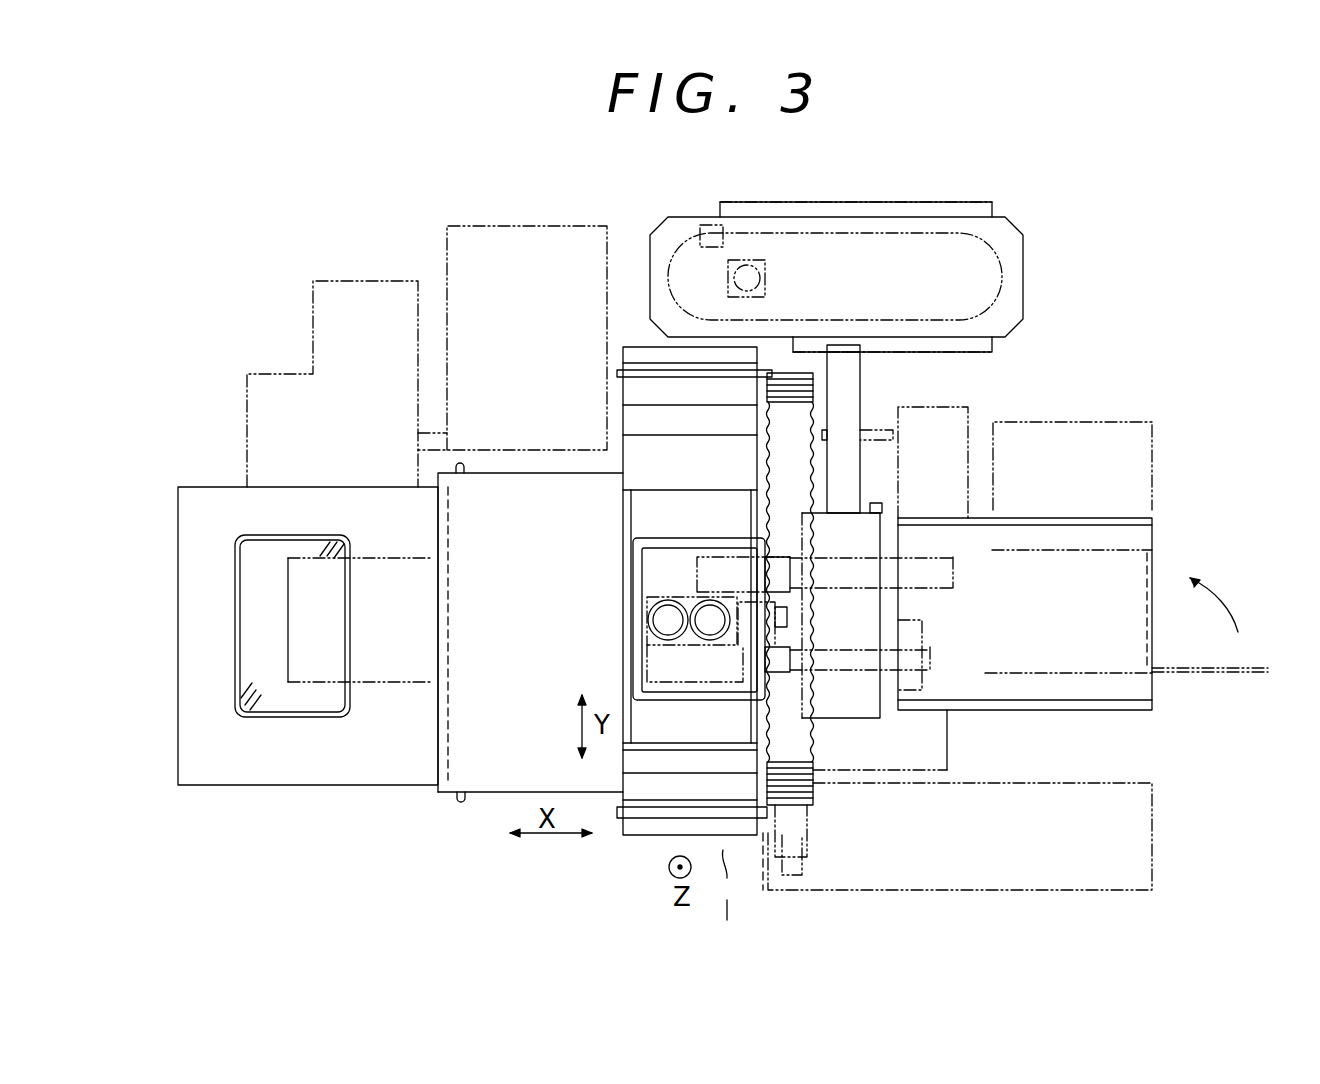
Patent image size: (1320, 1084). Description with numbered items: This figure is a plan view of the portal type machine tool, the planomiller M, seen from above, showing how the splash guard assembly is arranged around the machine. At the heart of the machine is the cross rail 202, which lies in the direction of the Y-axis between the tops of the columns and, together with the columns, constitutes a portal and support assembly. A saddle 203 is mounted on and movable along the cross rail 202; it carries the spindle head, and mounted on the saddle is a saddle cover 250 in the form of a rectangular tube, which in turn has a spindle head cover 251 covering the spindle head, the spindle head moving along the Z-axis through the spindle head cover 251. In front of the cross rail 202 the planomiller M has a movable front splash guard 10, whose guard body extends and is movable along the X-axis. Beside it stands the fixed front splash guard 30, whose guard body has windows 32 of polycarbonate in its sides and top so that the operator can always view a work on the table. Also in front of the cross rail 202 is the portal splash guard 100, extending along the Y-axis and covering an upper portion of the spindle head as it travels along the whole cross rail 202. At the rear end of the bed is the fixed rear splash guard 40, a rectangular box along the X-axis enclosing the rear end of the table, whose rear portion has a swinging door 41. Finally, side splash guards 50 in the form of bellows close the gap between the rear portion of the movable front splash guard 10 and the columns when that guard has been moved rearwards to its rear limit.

The movable front splash guard 10 is at (495, 802).
The fixed front splash guard 30 is at (303, 798).
The windows 32 is at (253, 665).
The portal splash guard 100 is at (640, 850).
The saddle cover 250 is at (633, 594).
The spindle head cover 251 is at (645, 638).
The side splash guards 50 is at (853, 784).
The saddle 203 is at (757, 680).
The cross rail 202 is at (800, 830).
The fixed rear splash guard 40 is at (1170, 525).
The swinging door 41 is at (1223, 673).
The planomiller M is at (1057, 346).